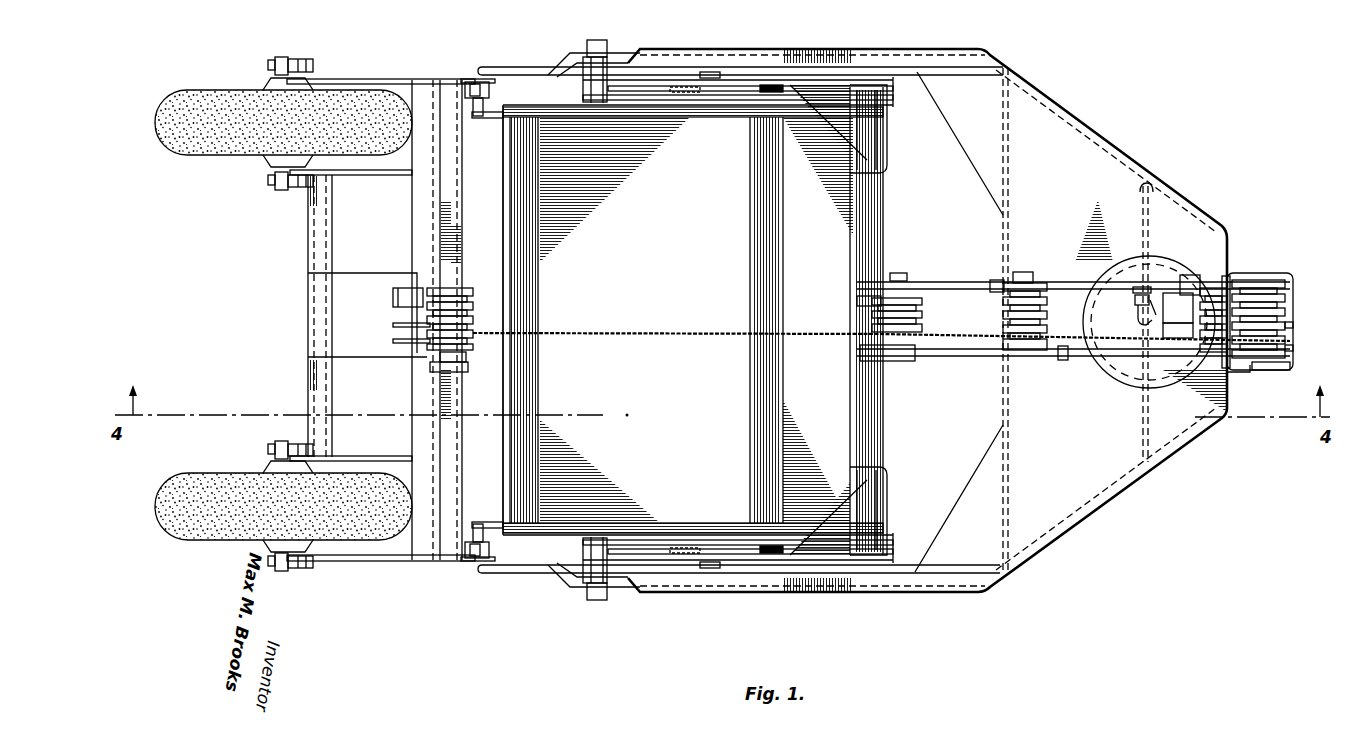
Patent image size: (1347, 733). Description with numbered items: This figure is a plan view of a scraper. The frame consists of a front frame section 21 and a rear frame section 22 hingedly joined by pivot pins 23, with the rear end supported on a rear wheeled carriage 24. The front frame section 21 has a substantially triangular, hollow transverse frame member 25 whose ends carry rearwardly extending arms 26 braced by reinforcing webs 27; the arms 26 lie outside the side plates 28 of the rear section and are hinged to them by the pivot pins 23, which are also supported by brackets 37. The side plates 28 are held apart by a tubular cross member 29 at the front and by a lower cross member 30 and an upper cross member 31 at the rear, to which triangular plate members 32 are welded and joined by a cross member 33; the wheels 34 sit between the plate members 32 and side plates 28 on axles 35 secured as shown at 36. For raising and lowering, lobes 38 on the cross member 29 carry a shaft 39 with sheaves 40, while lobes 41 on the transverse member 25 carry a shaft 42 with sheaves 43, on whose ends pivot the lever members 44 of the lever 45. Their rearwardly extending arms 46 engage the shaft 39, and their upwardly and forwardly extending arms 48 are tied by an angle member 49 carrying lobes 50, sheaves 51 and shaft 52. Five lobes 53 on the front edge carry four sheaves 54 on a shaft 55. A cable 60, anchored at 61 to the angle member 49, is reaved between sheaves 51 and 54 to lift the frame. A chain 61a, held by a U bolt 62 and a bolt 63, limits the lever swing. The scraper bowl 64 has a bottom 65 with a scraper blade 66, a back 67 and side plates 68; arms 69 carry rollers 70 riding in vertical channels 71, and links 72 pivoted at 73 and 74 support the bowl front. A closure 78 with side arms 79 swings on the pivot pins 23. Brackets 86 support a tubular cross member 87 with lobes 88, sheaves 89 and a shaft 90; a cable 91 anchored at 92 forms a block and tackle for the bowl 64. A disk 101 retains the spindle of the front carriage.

The front frame section 21 is at (1104, 124).
The rear frame section 22 is at (489, 60).
The pivot pins 23 is at (597, 40).
The rear wheeled carriage 24 is at (327, 103).
The transverse frame member 25 is at (1123, 167).
The rearwardly extending arm 26 is at (855, 50).
The reinforcing webs 27 is at (960, 160).
The side plates 28 is at (403, 78).
The tubular cross member 29 is at (886, 140).
The lower cross member 30 is at (450, 212).
The upper cross member 31 is at (430, 243).
The triangular plate members 32 is at (391, 173).
The cross member 33 is at (310, 244).
The wheels 34 is at (212, 95).
The axles 35 is at (303, 56).
The axle securing points 36 is at (276, 56).
The brackets 37 is at (562, 53).
The lobes 38 is at (868, 303).
The shaft 39 is at (898, 274).
The sheaves 40 is at (912, 318).
The lobes 41 is at (994, 283).
The shaft 42 is at (1026, 277).
The sheaves 43 is at (1042, 300).
The lever members 44 is at (950, 282).
The raising and lowering lever 45 is at (1063, 366).
The rearwardly extending arms 46 is at (872, 350).
The upwardly and forwardly extending arms 48 is at (1189, 276).
The reinforcing angle member 49 is at (1178, 292).
The forwardly extending lobes 50 is at (1232, 300).
The sheaves 51 is at (1258, 308).
The shaft 52 is at (1237, 373).
The lobes 53 is at (1291, 283).
The sheaves 54 is at (1290, 348).
The shaft 55 is at (1265, 371).
The cable 60 is at (1178, 308).
The cable anchor 61 is at (1180, 340).
The chain 61a is at (1132, 312).
The U bolt 62 is at (1142, 335).
The bolt 63 is at (1154, 250).
The scraper bowl 64 is at (696, 320).
The bottom 65 is at (540, 450).
The scraper blade 66 is at (752, 213).
The back 67 is at (530, 393).
The side plates 68 is at (690, 108).
The rearwardly extending arms 69 is at (487, 118).
The roller 70 is at (472, 80).
The vertical channels 71 is at (493, 92).
The links 72 is at (728, 88).
The lower pivot 73 is at (770, 90).
The upper pivot 74 is at (706, 72).
The closure 78 is at (884, 230).
The side arms 79 is at (738, 95).
The brackets 86 is at (344, 352).
The tubular cross member 87 is at (395, 326).
The lobes 88 is at (470, 297).
The sheaves 89 is at (473, 340).
The shaft 90 is at (440, 370).
The cable 91 is at (662, 330).
The cable anchor 92 is at (406, 287).
The disk 101 is at (1135, 250).